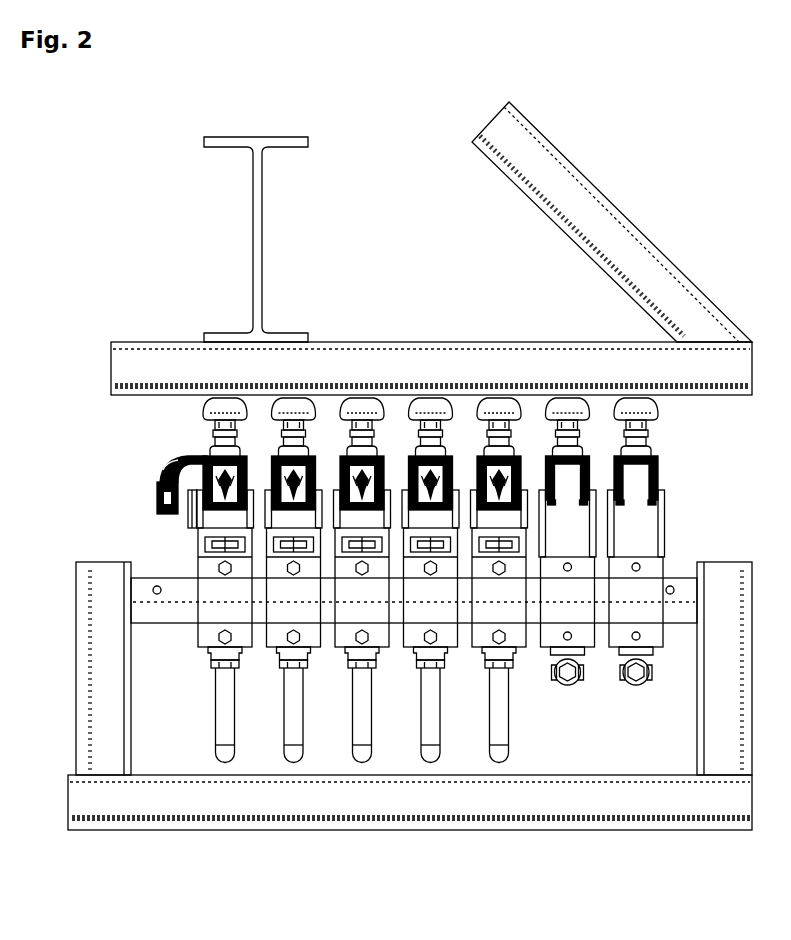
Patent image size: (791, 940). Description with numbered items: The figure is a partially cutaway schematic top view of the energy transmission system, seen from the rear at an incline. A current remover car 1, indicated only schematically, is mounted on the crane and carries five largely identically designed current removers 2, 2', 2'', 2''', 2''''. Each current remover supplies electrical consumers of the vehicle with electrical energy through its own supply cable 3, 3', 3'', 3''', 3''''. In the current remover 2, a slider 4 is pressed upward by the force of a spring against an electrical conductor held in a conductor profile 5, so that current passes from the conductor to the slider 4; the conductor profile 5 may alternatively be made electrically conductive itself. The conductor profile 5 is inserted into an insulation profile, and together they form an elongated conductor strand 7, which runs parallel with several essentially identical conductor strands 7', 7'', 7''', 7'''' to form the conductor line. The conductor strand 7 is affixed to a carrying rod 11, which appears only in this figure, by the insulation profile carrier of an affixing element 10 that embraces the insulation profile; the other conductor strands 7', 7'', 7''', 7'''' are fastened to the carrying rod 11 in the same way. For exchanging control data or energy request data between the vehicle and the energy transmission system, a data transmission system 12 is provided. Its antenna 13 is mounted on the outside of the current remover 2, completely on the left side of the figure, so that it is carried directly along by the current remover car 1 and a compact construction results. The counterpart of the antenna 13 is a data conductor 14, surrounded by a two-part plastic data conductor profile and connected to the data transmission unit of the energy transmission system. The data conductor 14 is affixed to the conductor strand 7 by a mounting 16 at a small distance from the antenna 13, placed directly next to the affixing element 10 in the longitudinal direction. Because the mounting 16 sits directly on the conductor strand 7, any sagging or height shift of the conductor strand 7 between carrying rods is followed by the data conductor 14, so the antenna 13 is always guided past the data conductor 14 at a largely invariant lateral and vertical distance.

The current remover car 1 is at (232, 831).
The current remover 2 is at (220, 617).
The current remover 2' is at (289, 617).
The current remover 2'' is at (357, 617).
The current remover 2''' is at (426, 617).
The current remover 2'''' is at (494, 617).
The supply cable 3 is at (213, 705).
The supply cable 3' is at (282, 705).
The supply cable 3'' is at (350, 705).
The supply cable 3''' is at (419, 705).
The supply cable 3'''' is at (487, 705).
The slider 4 is at (220, 513).
The conductor profile 5 is at (205, 470).
The conductor strand 7 is at (232, 470).
The conductor strand 7' is at (303, 470).
The conductor strand 7'' is at (373, 470).
The conductor strand 7''' is at (444, 470).
The conductor strand 7'''' is at (514, 470).
The affixing element 10 is at (207, 403).
The carrying rod 11 is at (156, 341).
The data transmission system 12 is at (150, 459).
The antenna 13 is at (170, 526).
The data conductor 14 is at (158, 500).
The mounting 16 is at (149, 474).